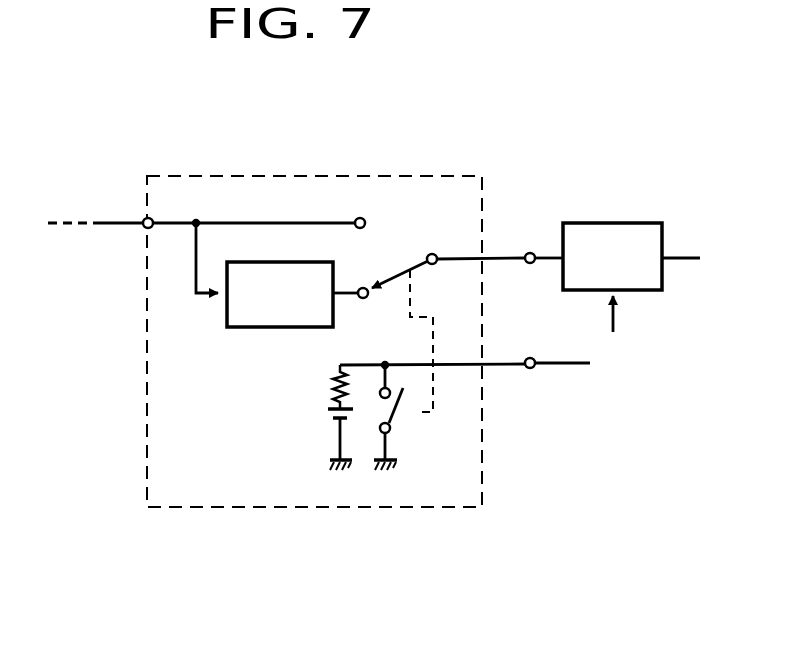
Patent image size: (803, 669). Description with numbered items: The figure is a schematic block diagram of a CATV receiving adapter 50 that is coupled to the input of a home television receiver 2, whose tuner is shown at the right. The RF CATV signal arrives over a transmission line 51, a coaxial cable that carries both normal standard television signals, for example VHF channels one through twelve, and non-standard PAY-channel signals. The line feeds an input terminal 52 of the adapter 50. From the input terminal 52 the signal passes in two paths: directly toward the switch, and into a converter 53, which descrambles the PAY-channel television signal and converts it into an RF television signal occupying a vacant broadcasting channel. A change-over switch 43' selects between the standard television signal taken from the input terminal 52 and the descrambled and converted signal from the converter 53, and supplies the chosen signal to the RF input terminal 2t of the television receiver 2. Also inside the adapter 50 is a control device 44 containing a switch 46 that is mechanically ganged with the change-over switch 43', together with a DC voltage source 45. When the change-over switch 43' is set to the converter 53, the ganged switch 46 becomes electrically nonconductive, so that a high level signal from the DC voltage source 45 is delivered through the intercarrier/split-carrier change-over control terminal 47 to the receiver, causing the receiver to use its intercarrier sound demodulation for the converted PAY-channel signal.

The television receiver 2 is at (612, 223).
The RF input terminal 2t is at (529, 253).
The change-over switch 43' is at (448, 235).
The control device 44 is at (263, 420).
The DC voltage source 45 is at (327, 408).
The switch 46 is at (391, 420).
The intercarrier/split-carrier change-over control terminal 47 is at (528, 370).
The CATV receiving adapter 50 is at (302, 510).
The transmission line 51 is at (108, 222).
The input terminal 52 is at (141, 231).
The converter 53 is at (227, 298).